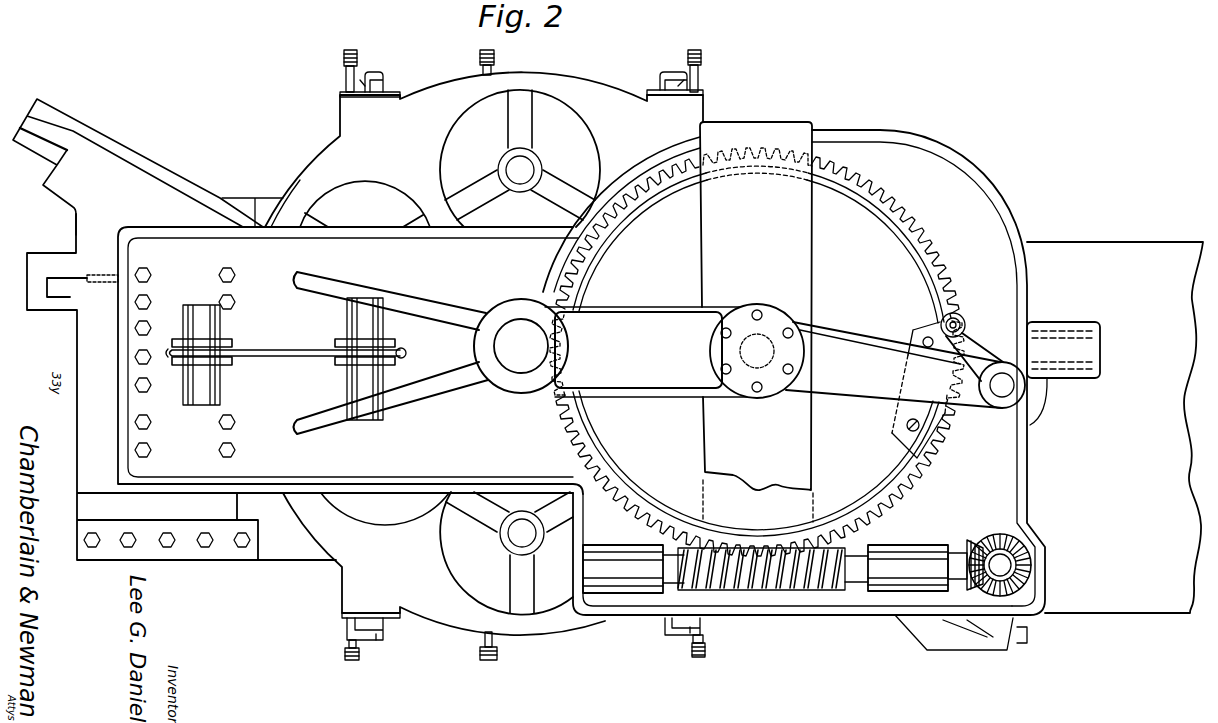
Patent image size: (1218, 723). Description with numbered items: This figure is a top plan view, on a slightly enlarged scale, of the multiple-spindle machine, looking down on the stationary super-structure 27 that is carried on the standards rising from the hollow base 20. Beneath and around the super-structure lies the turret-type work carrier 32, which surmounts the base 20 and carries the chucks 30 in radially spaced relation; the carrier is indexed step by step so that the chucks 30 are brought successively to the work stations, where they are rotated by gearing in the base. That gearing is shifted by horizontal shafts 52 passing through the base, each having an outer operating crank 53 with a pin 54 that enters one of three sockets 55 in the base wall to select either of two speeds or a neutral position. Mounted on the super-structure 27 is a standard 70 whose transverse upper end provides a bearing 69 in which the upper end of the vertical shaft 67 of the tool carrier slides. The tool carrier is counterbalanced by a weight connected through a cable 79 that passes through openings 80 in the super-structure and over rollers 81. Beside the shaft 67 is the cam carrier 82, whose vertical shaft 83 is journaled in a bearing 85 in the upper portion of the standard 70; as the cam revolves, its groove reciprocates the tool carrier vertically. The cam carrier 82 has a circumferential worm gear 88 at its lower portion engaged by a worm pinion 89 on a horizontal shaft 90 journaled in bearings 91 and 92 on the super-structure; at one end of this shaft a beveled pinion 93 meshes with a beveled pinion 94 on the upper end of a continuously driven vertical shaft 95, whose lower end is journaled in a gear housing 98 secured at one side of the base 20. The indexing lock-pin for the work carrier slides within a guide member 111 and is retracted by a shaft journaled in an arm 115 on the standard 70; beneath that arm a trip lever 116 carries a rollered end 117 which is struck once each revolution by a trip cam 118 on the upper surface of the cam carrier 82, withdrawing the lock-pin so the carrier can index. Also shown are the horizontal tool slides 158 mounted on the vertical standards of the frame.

The horizontal tool slides 158 is at (50, 125).
The base 20 is at (305, 556).
The super-structure 27 is at (312, 480).
The chucks 30 is at (450, 352).
The work carrier 32 is at (484, 353).
The shafts 52 is at (378, 72).
The operating crank 53 is at (361, 82).
The pin 54 is at (349, 50).
The sockets 55 is at (394, 92).
The shaft 67 is at (521, 346).
The bearing 69 is at (512, 312).
The standard 70 is at (412, 412).
The cable 79 is at (287, 350).
The openings 80 is at (172, 353).
The rollers 81 is at (227, 347).
The cam carrier 82 is at (794, 368).
The vertical shaft 83 is at (759, 349).
The bearing 85 is at (716, 348).
The worm gear 88 is at (945, 456).
The worm pinion 89 is at (743, 590).
The horizontal shaft 90 is at (958, 550).
The bearing 91 is at (633, 569).
The bearing 92 is at (896, 568).
The beveled pinion 93 is at (980, 544).
The beveled pinion 94 is at (1030, 556).
The vertical shaft 95 is at (1012, 566).
The gear housing 98 is at (1049, 446).
The guide member 111 is at (1063, 373).
The arm 115 is at (905, 365).
The trip lever 116 is at (980, 340).
The rollered end 117 is at (961, 317).
The trip cam 118 is at (950, 423).